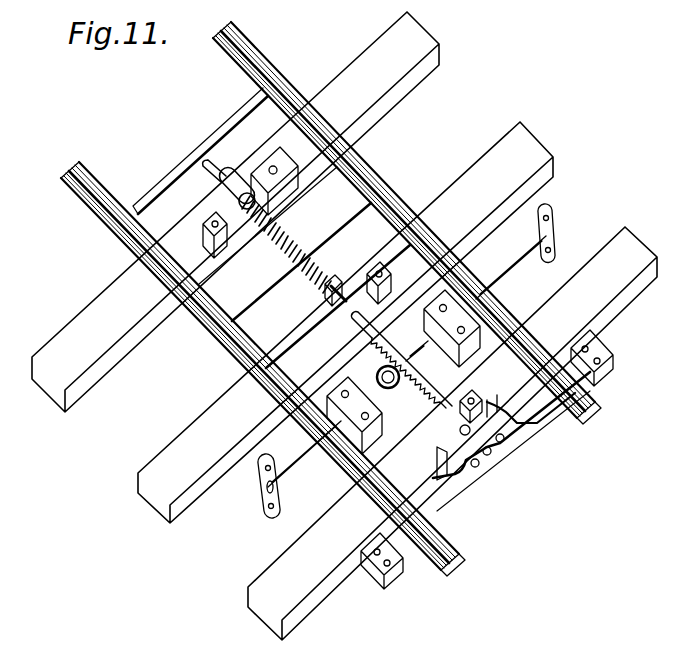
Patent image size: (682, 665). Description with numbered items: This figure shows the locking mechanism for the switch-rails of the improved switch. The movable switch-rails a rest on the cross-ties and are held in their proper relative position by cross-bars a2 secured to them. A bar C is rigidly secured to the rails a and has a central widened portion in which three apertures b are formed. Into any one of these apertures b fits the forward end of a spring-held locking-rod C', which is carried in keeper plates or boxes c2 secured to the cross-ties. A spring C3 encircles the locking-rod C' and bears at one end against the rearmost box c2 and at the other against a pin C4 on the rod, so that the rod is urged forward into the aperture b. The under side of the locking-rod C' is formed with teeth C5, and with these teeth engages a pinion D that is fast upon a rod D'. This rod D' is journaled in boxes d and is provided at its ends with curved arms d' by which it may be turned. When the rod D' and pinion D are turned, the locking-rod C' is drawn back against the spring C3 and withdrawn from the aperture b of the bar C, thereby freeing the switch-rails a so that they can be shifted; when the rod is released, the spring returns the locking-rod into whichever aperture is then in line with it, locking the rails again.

The switch-rails a is at (392, 197).
The cross-bars a2 is at (168, 170).
The keeper plates or boxes c2 is at (200, 238).
The spring C3 is at (272, 248).
The pin C4 is at (322, 293).
The teeth C5 is at (436, 393).
The pinion D is at (388, 389).
The rod D' is at (407, 365).
The boxes d is at (403, 372).
The curved arms d' is at (404, 363).
The bar C is at (511, 441).
The locking-rod C' is at (531, 437).
The apertures b is at (504, 440).